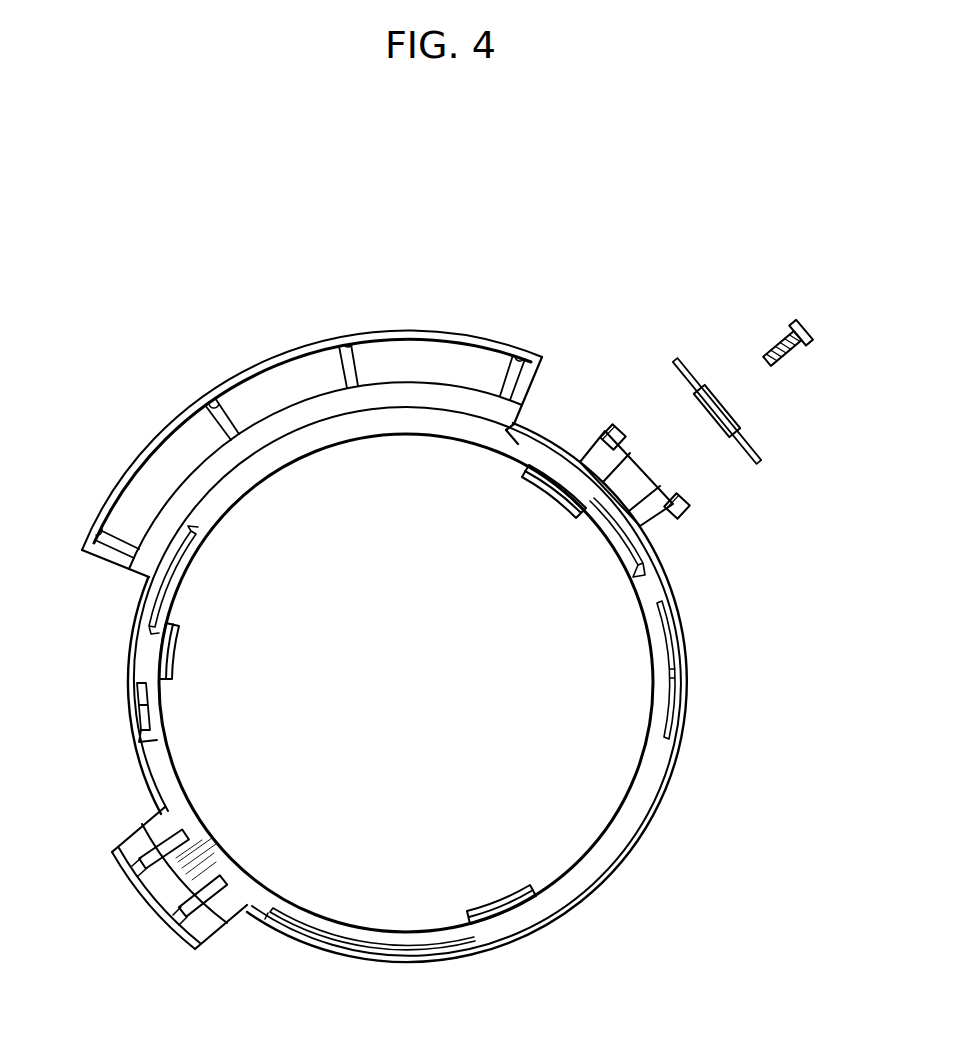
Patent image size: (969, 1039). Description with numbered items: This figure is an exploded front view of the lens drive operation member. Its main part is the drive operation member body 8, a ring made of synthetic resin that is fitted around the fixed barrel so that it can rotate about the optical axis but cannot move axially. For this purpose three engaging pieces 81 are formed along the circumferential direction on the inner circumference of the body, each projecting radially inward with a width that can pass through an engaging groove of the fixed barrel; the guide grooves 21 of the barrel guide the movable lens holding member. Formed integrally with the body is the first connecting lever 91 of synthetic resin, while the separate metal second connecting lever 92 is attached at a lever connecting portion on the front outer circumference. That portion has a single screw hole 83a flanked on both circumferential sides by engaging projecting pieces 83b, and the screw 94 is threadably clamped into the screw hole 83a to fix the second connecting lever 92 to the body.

The drive operation member body 8 is at (636, 853).
The engaging piece 81 is at (548, 492).
The guide groove 21 is at (441, 947).
The first connecting lever 91 is at (228, 920).
The screw hole 83a is at (650, 472).
The engaging projecting piece 83b is at (612, 428).
The second connecting lever 92 is at (758, 441).
The screw 94 is at (813, 331).